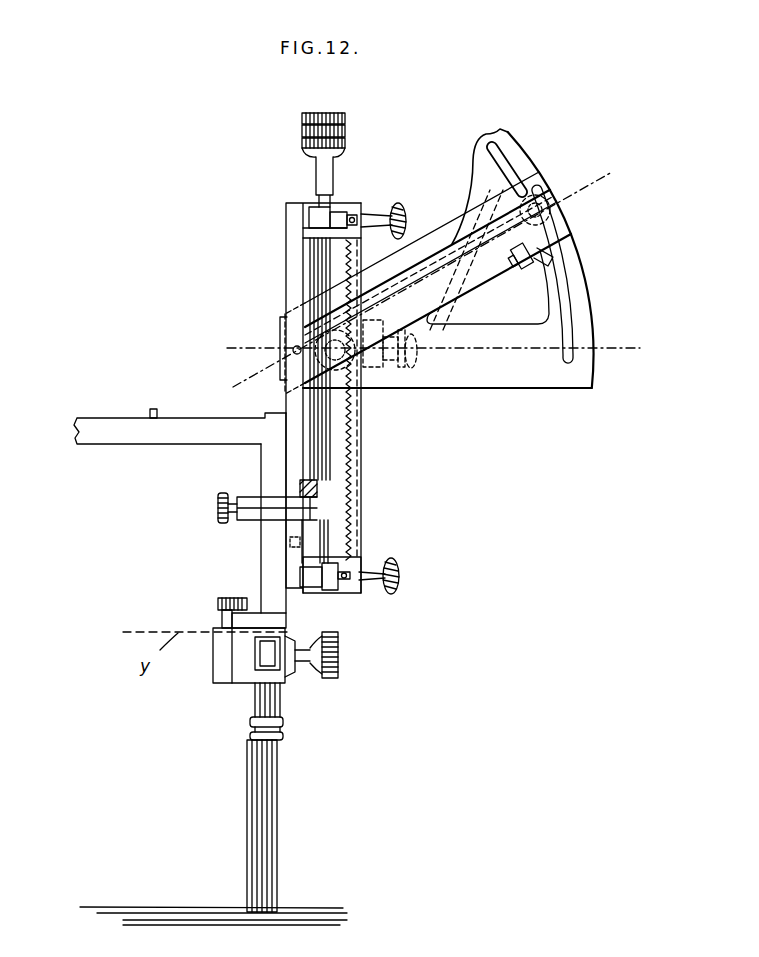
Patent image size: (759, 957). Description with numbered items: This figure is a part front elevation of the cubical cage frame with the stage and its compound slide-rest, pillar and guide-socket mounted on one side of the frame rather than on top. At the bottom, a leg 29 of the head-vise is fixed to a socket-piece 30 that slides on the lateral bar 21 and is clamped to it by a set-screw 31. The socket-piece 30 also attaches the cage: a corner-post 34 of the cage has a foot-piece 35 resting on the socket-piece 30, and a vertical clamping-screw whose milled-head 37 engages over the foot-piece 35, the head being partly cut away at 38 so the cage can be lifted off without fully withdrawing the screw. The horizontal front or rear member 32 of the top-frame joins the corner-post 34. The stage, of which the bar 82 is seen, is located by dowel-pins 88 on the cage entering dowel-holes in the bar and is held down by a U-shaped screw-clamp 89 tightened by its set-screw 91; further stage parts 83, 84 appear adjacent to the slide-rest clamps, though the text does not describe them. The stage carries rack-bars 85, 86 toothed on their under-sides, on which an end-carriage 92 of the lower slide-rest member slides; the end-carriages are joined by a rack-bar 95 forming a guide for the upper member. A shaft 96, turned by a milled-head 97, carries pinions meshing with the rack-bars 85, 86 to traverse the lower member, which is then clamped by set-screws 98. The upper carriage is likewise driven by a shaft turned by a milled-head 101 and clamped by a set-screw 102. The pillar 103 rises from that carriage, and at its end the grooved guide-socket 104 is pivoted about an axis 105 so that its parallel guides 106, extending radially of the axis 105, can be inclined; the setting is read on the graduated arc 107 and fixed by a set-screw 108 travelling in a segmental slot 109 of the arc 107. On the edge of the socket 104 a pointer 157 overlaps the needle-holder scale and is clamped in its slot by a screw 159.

The lateral bar 21 is at (265, 658).
The leg 29 is at (252, 820).
The socket-piece 30 is at (226, 675).
The set-screw 31 is at (339, 666).
The front and rear member 32 is at (170, 432).
The corner-post 34 is at (266, 577).
The foot-piece 35 is at (270, 620).
The milled-head 37 is at (225, 598).
The cut-away portion 38 is at (218, 604).
The bar of the stage 82 is at (286, 256).
The clamp block 83 is at (316, 214).
The lower clamp block 84 is at (316, 585).
The rack-bar 85 is at (338, 222).
The rack-bar 86 is at (330, 585).
The dowel-pin 88 is at (150, 411).
The U-shaped screw-clamp 89 is at (247, 496).
The set-screw 91 is at (217, 507).
The end-carriage 92 is at (362, 210).
The rack-bar 95 is at (352, 505).
The shaft 96 is at (327, 460).
The milled-head 97 is at (347, 120).
The set-screw 98 is at (401, 210).
The milled-head 101 is at (372, 385).
The set-screw 102 is at (418, 370).
The pillar 103 is at (535, 380).
The grooved guide-socket 104 is at (458, 283).
The axis 105 is at (293, 348).
The parallel guides 106 is at (458, 232).
The graduated arc 107 is at (588, 296).
The set-screw 108 is at (552, 211).
The segmental slot 109 is at (572, 326).
The pointer 157 is at (520, 270).
The screw 159 is at (550, 262).